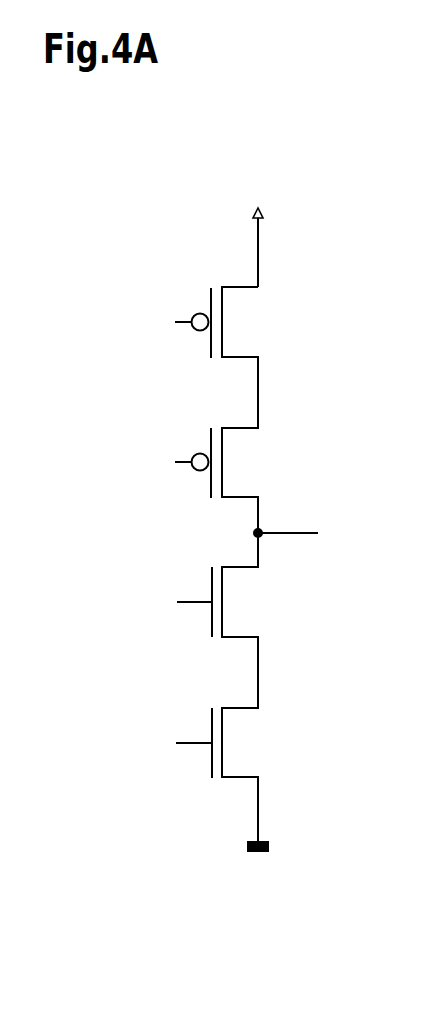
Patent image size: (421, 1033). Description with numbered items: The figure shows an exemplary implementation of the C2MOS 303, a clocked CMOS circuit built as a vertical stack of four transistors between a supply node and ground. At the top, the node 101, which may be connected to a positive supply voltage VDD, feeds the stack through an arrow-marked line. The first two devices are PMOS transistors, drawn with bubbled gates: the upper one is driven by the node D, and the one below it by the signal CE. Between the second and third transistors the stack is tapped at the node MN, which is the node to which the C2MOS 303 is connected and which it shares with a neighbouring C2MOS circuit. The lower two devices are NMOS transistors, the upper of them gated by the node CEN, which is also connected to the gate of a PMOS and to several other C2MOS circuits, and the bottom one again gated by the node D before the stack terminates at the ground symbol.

The node 101 is at (257, 229).
The C2MOS 303 is at (237, 565).
The node D is at (192, 322).
The clock enable signal CE is at (161, 465).
The node MN is at (309, 535).
The node CEN is at (163, 602).